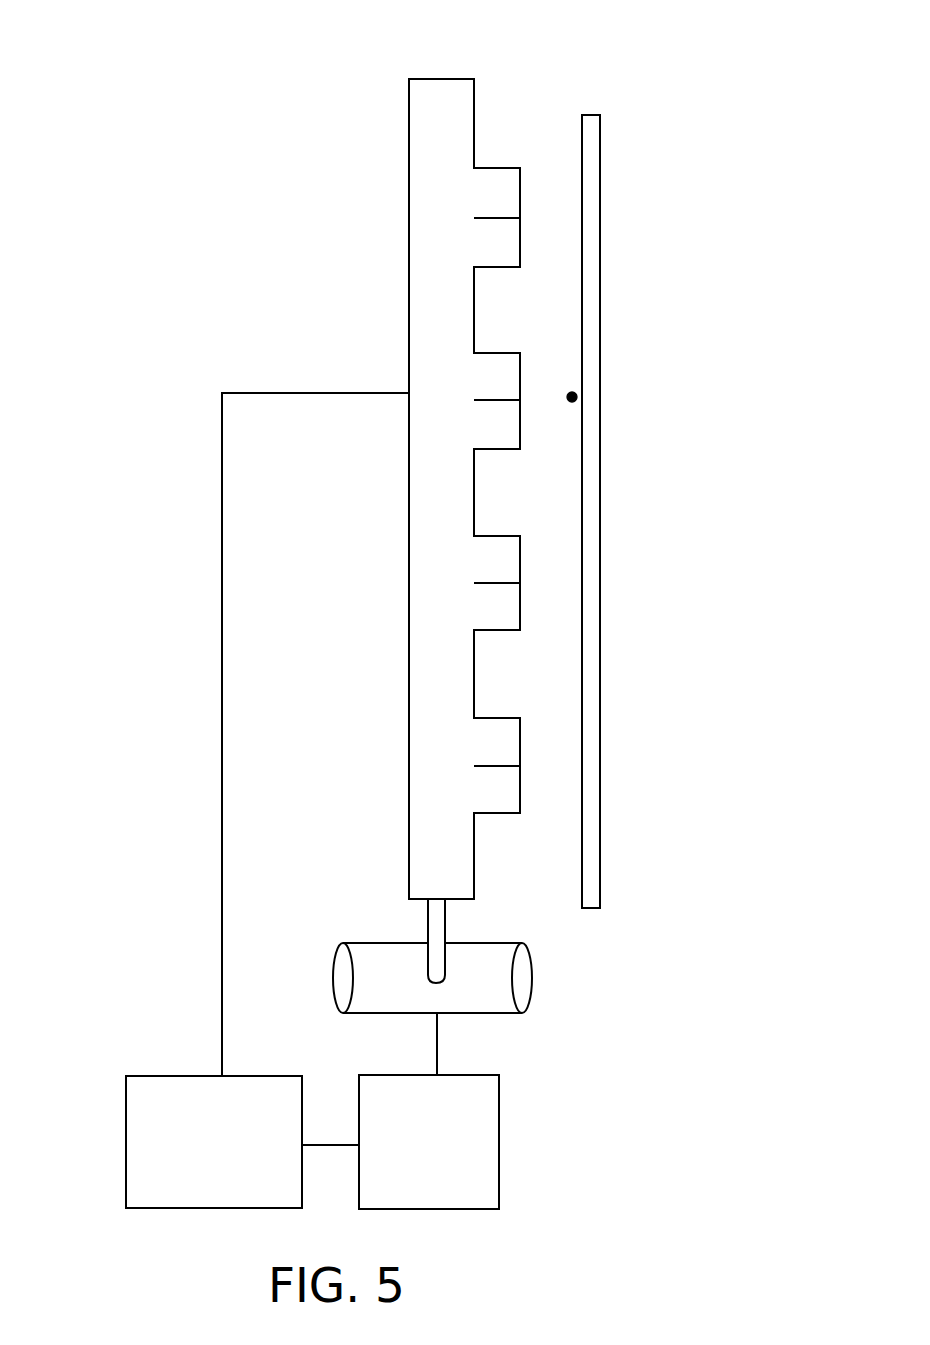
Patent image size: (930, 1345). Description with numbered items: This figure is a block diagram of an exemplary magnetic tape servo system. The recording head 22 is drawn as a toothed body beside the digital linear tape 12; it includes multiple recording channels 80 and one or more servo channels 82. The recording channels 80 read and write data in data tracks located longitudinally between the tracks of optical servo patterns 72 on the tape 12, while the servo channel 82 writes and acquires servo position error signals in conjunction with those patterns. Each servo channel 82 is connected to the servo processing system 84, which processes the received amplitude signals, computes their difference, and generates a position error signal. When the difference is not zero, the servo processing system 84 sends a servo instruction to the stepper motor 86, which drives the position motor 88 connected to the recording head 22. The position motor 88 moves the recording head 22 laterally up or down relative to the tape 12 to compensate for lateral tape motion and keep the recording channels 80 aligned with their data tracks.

The digital linear tape 12 is at (592, 115).
The recording head 22 is at (437, 79).
The tracks of optical servo patterns 72 is at (563, 368).
The recording channels 80 is at (492, 168).
The servo channel 82 is at (493, 353).
The servo processing system 84 is at (126, 1134).
The stepper motor 86 is at (499, 1158).
The position motor 88 is at (502, 998).